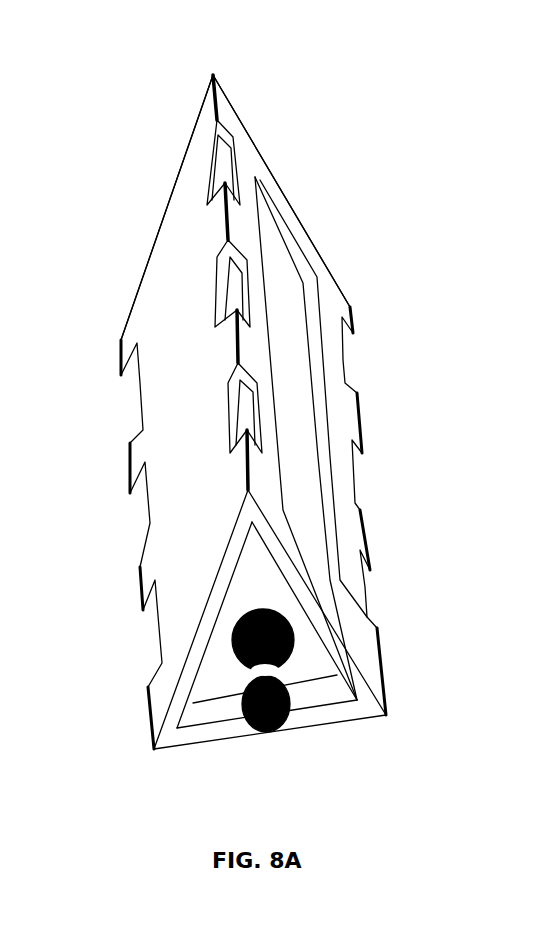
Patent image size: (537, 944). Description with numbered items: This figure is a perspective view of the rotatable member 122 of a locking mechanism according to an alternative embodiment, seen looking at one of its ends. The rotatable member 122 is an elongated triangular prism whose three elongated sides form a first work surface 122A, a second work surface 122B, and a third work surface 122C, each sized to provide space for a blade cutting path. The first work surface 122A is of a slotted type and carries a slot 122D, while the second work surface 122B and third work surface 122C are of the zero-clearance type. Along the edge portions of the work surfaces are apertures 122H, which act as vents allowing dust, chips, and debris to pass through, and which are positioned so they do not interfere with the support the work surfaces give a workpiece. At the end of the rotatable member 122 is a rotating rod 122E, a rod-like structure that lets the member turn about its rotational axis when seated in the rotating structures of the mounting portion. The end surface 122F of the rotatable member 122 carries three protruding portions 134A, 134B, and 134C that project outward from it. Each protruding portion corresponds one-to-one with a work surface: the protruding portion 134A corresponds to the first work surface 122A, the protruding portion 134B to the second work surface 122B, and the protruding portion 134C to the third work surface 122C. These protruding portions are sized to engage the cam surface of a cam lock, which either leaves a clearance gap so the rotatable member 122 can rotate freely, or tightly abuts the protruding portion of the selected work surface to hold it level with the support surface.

The rotatable member 122 is at (314, 106).
The first work surface 122A is at (295, 211).
The second work surface 122B is at (157, 322).
The third work surface 122C is at (331, 725).
The slot 122D is at (293, 322).
The rotating rod 122E is at (267, 733).
The end surface 122F is at (219, 673).
The aperture 122H is at (223, 160).
The protruding portion 134A is at (315, 606).
The protruding portion 134B is at (185, 690).
The protruding portion 134C is at (355, 698).